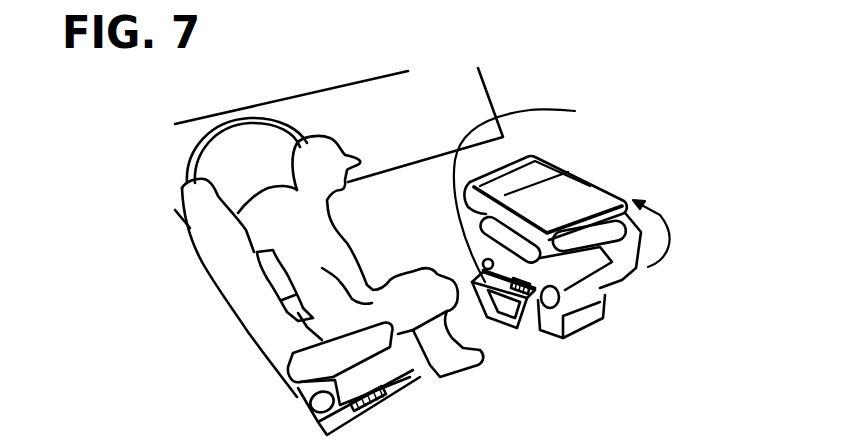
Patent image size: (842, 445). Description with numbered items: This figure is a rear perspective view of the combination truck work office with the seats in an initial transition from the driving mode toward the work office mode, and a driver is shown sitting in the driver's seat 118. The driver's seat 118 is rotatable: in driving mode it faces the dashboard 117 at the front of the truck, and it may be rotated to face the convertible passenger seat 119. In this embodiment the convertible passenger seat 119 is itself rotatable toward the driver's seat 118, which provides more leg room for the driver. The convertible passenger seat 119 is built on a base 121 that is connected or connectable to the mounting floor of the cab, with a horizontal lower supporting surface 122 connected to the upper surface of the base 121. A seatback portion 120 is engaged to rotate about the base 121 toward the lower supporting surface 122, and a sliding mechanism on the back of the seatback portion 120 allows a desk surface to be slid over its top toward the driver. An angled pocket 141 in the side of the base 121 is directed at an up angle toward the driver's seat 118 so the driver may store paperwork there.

The dashboard 117 is at (368, 105).
The driver's seat 118 is at (230, 292).
The angled pocket 141 is at (540, 189).
The convertible passenger seat 119 is at (588, 185).
The seatback portion 120 is at (607, 283).
The lower supporting surface 122 is at (547, 335).
The base 121 is at (522, 338).